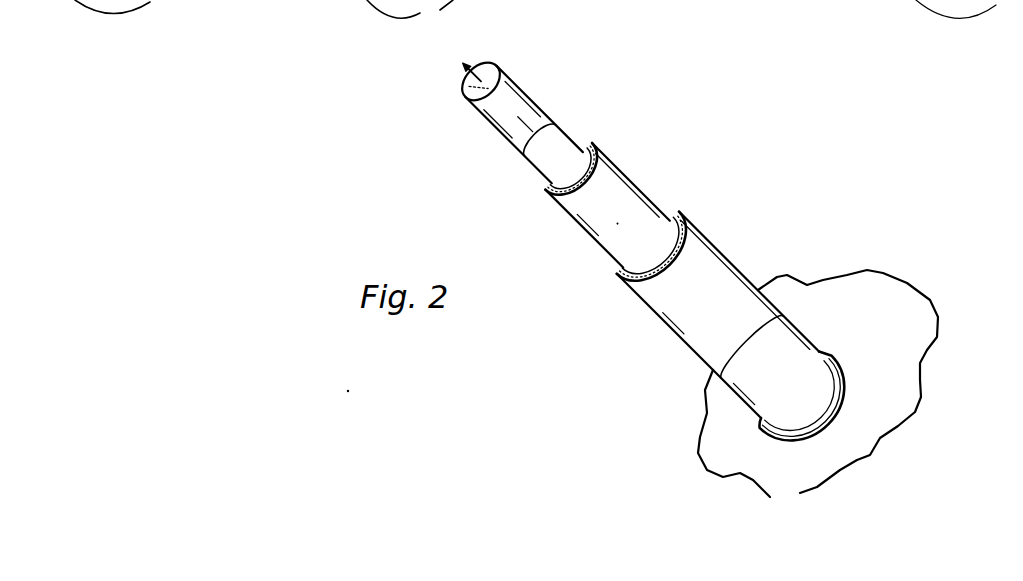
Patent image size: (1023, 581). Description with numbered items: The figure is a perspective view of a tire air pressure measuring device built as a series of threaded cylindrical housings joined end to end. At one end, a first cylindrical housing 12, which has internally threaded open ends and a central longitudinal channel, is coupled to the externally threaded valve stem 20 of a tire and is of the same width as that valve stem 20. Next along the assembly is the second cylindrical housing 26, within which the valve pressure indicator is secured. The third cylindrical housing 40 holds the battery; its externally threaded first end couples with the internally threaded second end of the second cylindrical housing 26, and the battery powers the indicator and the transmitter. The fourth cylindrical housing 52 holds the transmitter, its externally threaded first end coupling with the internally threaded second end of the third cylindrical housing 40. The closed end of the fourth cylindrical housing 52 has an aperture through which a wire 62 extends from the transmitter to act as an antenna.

The first cylindrical housing 12 is at (705, 271).
The valve stem 20 is at (826, 358).
The second cylindrical housing 26 is at (618, 205).
The third cylindrical housing 40 is at (573, 143).
The fourth cylindrical housing 52 is at (526, 103).
The wire 62 is at (466, 64).